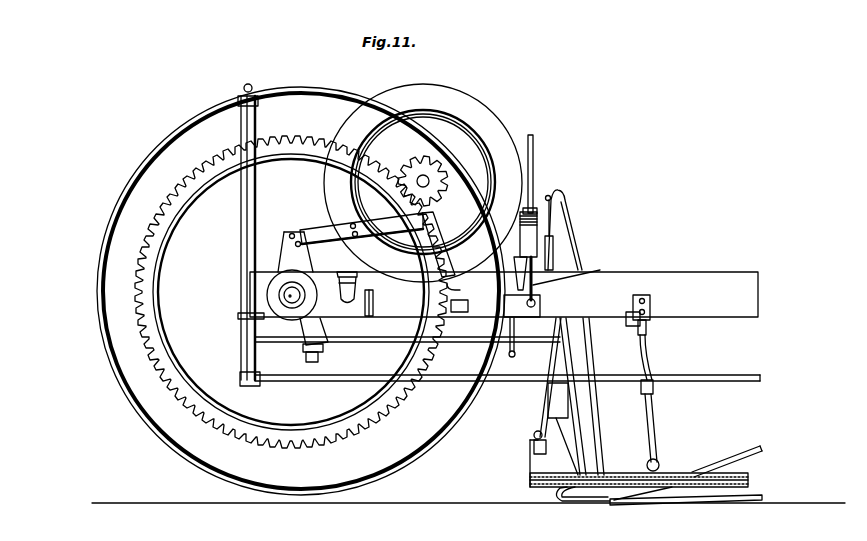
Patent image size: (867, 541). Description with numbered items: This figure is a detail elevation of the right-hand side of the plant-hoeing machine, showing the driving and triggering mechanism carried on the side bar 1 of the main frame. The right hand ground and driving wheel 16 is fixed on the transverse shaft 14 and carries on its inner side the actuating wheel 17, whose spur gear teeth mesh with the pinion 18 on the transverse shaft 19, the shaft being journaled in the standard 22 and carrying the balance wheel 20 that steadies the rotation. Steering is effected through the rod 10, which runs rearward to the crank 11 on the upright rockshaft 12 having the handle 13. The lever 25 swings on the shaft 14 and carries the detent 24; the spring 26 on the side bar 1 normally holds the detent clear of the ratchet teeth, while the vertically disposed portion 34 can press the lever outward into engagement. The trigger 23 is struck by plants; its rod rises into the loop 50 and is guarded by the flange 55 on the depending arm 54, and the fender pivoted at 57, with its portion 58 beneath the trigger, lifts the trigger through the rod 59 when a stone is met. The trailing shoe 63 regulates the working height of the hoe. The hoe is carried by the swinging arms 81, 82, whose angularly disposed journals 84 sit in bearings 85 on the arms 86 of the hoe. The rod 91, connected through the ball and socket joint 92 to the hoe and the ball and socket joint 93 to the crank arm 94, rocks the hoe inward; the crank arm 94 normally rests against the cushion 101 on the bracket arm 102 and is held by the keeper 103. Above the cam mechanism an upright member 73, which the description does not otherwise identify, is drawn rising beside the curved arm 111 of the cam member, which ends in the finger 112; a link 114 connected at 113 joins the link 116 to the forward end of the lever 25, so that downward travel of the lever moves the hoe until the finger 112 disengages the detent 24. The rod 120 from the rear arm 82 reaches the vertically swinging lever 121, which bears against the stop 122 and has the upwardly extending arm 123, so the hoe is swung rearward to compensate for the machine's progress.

The side bar 1 is at (693, 288).
The rod 10 is at (728, 374).
The crank 11 is at (238, 377).
The upright rockshaft 12 is at (239, 347).
The handle 13 is at (251, 85).
The transverse shaft 14 is at (280, 296).
The right hand ground and driving wheel 16 is at (128, 165).
The actuating wheel 17 is at (170, 216).
The pinion 18 is at (438, 165).
The transverse shaft 19 is at (420, 178).
The balance wheel 20 is at (478, 112).
The standard 22 is at (492, 244).
The trigger 23 is at (572, 465).
The detent 24 is at (464, 298).
The lever 25 is at (382, 303).
The spring 26 is at (346, 272).
The vertically disposed portion 34 is at (513, 358).
The loop 50 is at (566, 193).
The depending arm 54 is at (570, 358).
The flange 55 is at (558, 397).
The pivot 57 is at (752, 449).
The fender portion 58 is at (565, 503).
The rod 59 is at (596, 398).
The trailing shoe 63 is at (714, 500).
The rod 73 is at (534, 156).
The swinging arm 81 is at (702, 474).
The swinging arm 82 is at (540, 400).
The angularly disposed journal 84 is at (534, 434).
The bearing 85 is at (534, 448).
The arm 86 is at (529, 466).
The rod 91 is at (658, 423).
The ball and socket joint 92 is at (648, 462).
The ball and socket joint 93 is at (656, 392).
The crank arm 94 is at (651, 361).
The cushion 101 is at (651, 313).
The bracket arm 102 is at (633, 303).
The keeper 103 is at (652, 332).
The arm 111 is at (538, 223).
The finger 112 is at (533, 288).
The connection 113 is at (535, 207).
The link 114 is at (554, 250).
The link 116 is at (601, 270).
The rod 120 is at (400, 376).
The vertically swinging lever 121 is at (322, 333).
The stop 122 is at (296, 340).
The arm 123 is at (278, 243).